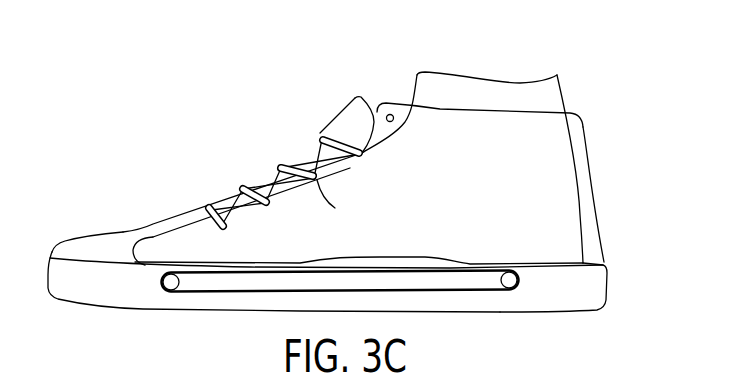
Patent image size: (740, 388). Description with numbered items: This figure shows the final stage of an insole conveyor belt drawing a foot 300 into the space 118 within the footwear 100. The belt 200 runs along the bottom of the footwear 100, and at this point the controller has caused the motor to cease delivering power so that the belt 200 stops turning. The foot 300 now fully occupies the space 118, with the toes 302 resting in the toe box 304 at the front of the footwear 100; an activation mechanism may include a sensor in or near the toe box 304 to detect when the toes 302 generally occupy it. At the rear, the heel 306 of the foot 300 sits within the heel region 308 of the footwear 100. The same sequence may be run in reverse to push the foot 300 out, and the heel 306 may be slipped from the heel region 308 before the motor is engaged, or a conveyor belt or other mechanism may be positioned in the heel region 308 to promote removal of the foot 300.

The footwear 100 is at (588, 160).
The space 118 is at (270, 175).
The belt 200 is at (438, 292).
The foot 300 is at (307, 152).
The toes 302 is at (175, 247).
The toe box 304 is at (88, 240).
The heel 306 is at (567, 238).
The heel region 308 is at (607, 203).